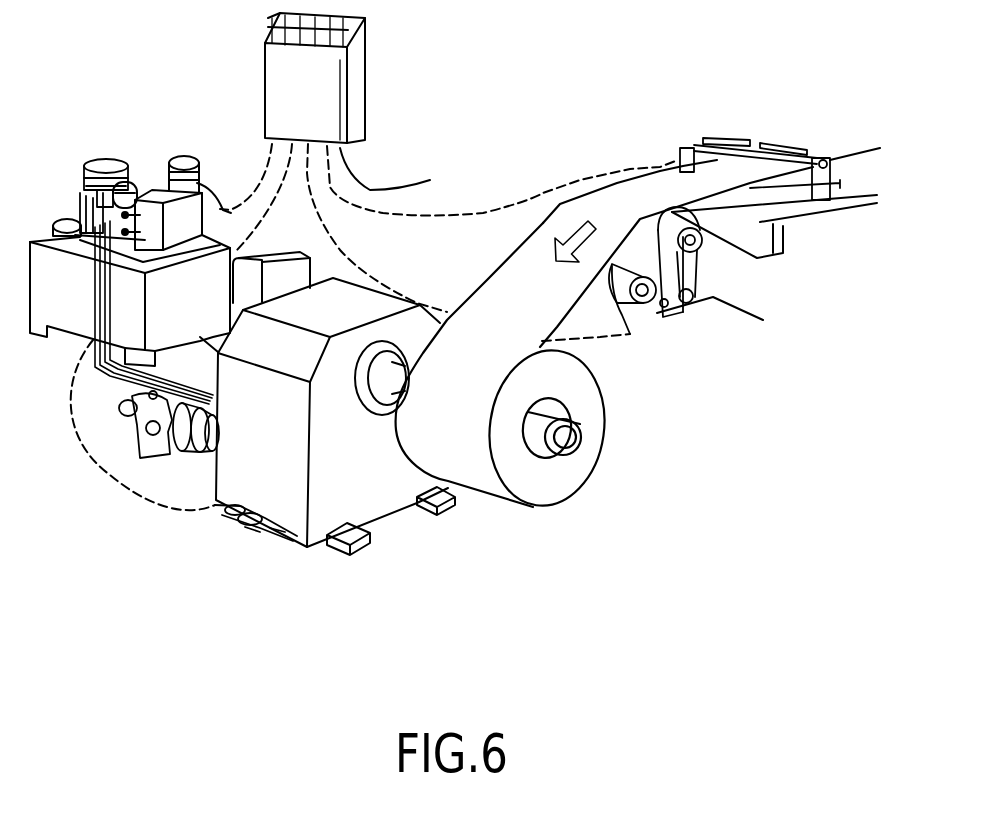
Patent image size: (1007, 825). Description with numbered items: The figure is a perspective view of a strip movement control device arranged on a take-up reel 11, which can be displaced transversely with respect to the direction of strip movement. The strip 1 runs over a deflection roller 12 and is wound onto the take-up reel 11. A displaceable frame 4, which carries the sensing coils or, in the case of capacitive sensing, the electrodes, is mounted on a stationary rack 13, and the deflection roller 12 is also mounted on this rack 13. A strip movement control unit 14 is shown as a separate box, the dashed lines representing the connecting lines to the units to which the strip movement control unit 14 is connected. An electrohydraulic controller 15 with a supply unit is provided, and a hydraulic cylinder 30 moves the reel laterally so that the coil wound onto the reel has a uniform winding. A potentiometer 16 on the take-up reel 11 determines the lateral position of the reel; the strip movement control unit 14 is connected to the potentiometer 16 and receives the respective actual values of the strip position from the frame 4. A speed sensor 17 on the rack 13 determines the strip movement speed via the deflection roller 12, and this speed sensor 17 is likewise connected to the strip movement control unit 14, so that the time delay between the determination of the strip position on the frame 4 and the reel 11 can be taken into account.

The strip 1 is at (640, 302).
The displaceable frame 4 is at (690, 148).
The take-up reel 11 is at (602, 452).
The deflection roller 12 is at (547, 207).
The stationary rack 13 is at (763, 312).
The strip movement control unit 14 is at (353, 80).
The electrohydraulic controller 15 is at (85, 152).
The potentiometer 16 is at (233, 528).
The speed sensor 17 is at (633, 335).
The hydraulic cylinder 30 is at (130, 413).